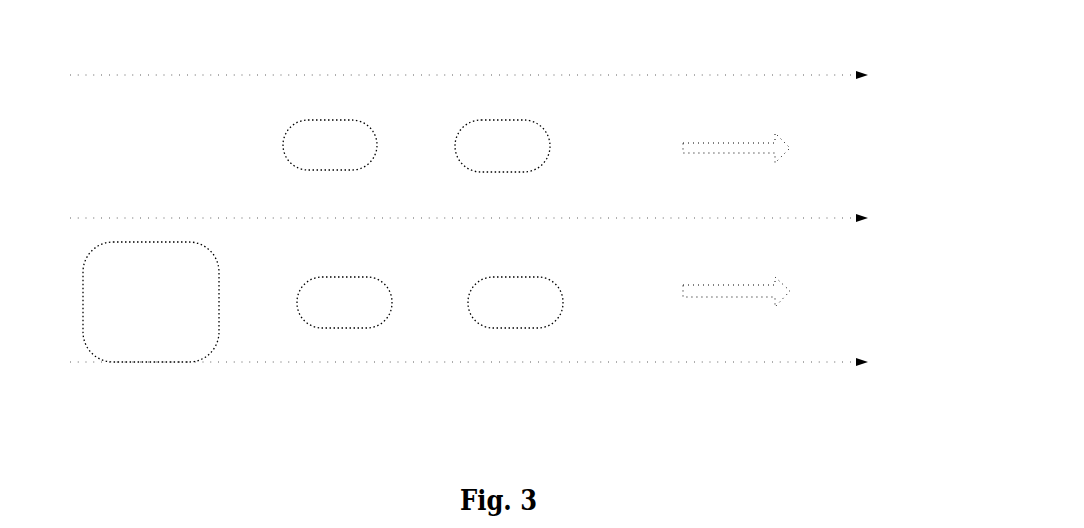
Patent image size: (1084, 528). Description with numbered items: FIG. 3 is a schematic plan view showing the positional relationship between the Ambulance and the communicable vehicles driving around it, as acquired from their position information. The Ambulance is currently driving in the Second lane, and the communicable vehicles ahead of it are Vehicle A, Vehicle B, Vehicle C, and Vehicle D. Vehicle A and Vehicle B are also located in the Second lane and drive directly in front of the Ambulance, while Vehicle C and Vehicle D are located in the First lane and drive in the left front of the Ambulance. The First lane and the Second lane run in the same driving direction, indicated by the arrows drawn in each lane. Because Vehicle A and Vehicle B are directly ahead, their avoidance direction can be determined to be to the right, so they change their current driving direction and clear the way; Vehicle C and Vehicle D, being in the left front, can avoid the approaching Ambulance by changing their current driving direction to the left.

The vehicle C Vehicle C is at (330, 120).
The vehicle D Vehicle D is at (503, 120).
The first lane First lane is at (657, 100).
The ambulance Ambulance is at (152, 362).
The vehicle A Vehicle A is at (343, 328).
The vehicle B Vehicle B is at (517, 328).
The second lane Second lane is at (602, 340).